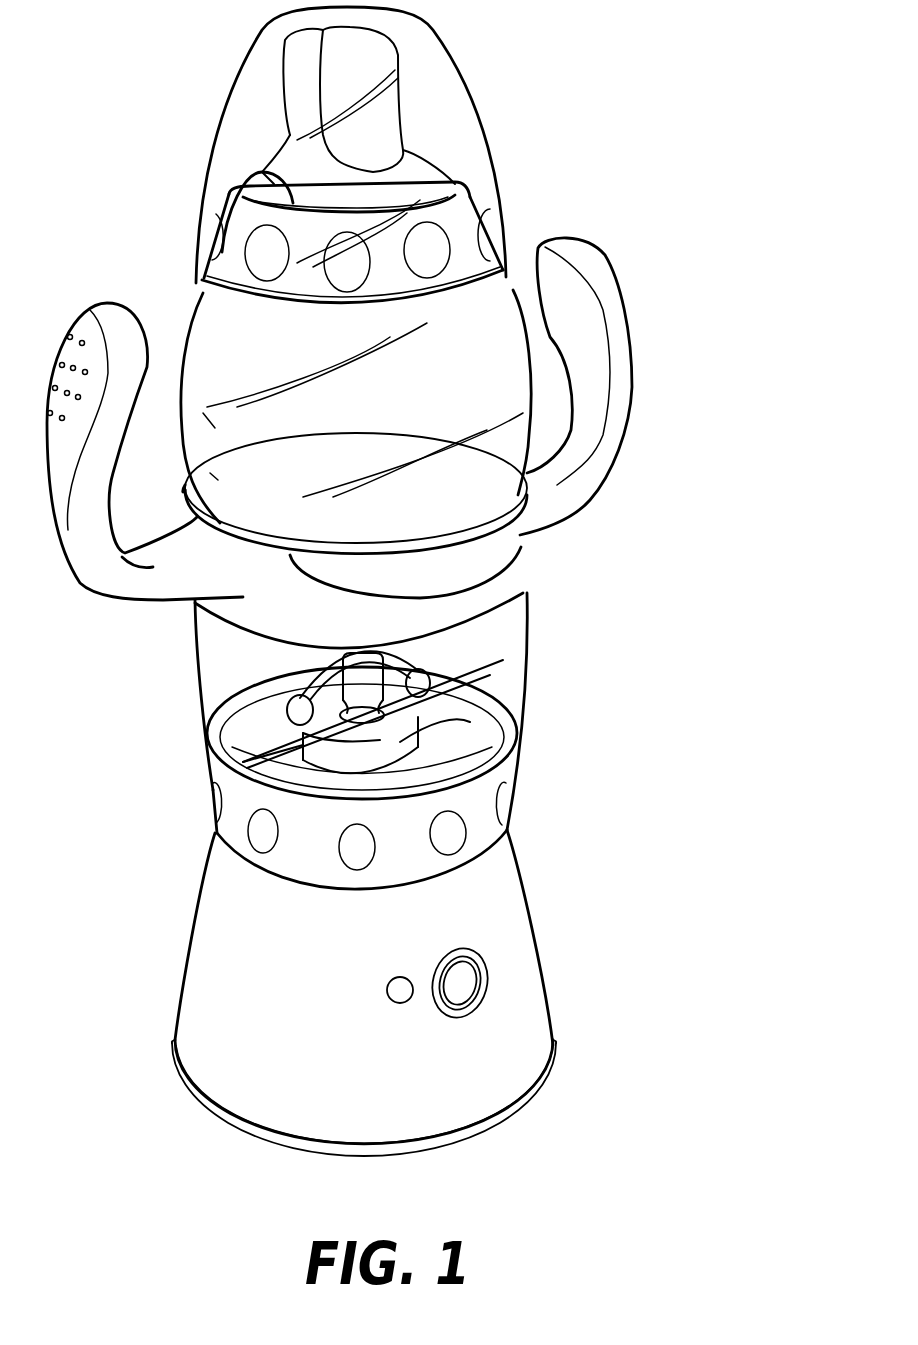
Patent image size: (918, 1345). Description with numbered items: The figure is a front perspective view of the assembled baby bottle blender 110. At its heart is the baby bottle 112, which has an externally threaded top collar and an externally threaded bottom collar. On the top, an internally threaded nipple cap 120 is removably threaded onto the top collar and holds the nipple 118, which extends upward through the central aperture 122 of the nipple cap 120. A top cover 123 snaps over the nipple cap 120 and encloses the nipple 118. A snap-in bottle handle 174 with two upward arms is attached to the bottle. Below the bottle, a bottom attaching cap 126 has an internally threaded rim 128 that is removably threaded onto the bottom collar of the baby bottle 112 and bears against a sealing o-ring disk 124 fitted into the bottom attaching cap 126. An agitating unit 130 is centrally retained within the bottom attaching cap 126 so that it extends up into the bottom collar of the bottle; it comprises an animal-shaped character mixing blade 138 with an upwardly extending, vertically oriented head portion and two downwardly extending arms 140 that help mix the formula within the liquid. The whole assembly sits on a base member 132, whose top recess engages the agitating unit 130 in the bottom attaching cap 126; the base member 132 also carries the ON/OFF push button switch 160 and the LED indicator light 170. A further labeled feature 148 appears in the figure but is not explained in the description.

The baby bottle blender 110 is at (694, 187).
The baby bottle 112 is at (495, 648).
The nipple 118 is at (402, 99).
The nipple cap 120 is at (463, 213).
The central aperture 122 is at (260, 173).
The top cover 123 is at (243, 111).
The sealing o-ring disk 124 is at (420, 723).
The bottom attaching cap 126 is at (209, 807).
The rim 128 is at (497, 780).
The agitating unit 130 is at (438, 667).
The base member 132 is at (178, 983).
The animal-shaped character mixing blade 138 is at (337, 648).
The arms 140 is at (220, 700).
The nipple vent 148 is at (303, 113).
The ON/OFF push button switch 160 is at (487, 973).
The LED indicator light 170 is at (402, 980).
The snap-in bottle handle 174 is at (615, 335).